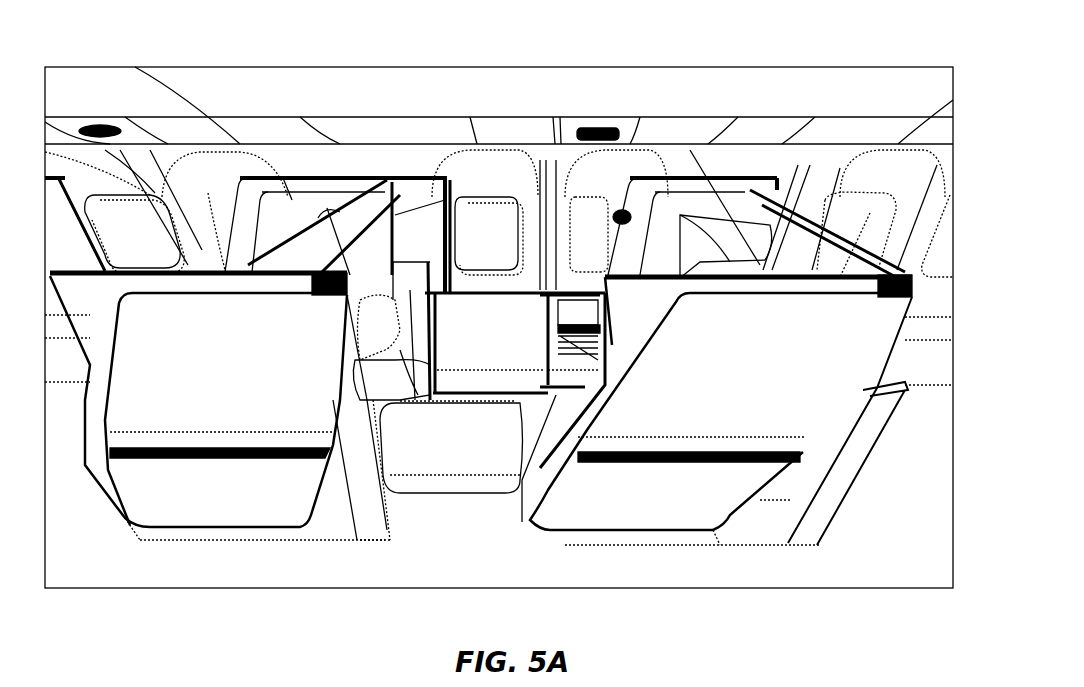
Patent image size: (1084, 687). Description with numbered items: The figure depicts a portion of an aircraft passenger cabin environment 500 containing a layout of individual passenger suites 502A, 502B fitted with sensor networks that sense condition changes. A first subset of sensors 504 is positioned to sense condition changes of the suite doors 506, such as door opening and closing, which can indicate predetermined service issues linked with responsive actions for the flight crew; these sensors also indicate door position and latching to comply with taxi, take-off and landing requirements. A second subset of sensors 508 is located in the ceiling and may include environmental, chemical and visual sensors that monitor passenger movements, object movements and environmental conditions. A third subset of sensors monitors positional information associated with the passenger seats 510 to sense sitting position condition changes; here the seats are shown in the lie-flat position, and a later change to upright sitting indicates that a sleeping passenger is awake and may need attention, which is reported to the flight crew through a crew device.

The aircraft passenger cabin environment 500 is at (212, 52).
The second subset of sensors 508 is at (95, 128).
The passenger suite 502A is at (332, 165).
The passenger suite 502B is at (727, 162).
The first subset of sensors 504 is at (319, 296).
The suite doors 506 is at (276, 508).
The passenger seats 510 is at (440, 488).